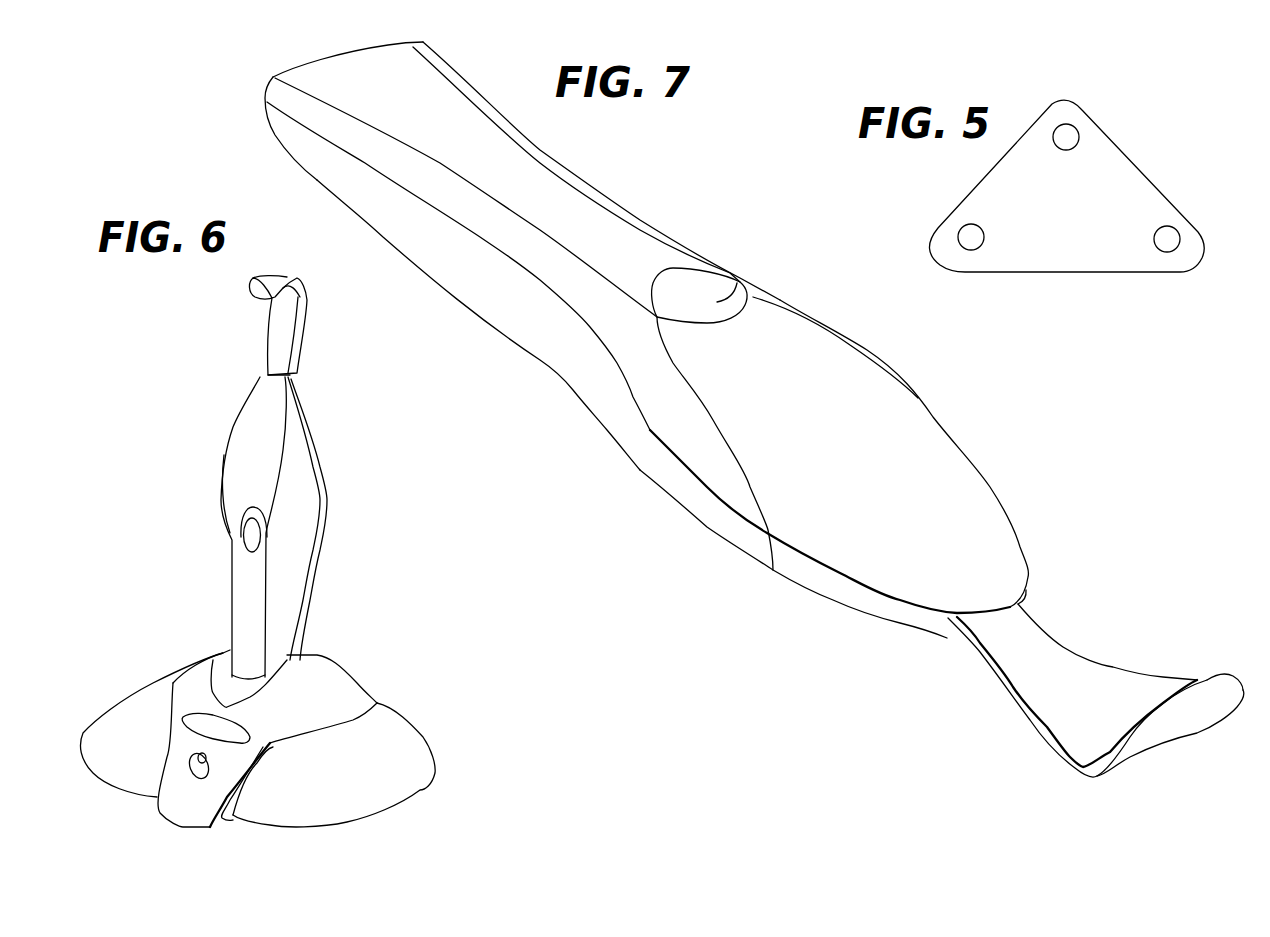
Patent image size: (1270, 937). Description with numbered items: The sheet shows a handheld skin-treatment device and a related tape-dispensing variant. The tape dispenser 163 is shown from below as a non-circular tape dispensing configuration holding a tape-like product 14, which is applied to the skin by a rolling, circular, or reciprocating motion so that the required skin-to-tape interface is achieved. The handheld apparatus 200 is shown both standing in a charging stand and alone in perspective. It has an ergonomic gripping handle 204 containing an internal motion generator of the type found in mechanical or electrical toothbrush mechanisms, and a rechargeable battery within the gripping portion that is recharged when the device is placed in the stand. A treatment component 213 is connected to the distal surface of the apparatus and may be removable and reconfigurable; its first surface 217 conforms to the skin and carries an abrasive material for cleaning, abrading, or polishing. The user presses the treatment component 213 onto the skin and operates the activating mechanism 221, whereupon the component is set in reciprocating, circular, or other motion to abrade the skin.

In FIG. 5, the tape-like product 14 is at (1192, 218).
In FIG. 5, the tape dispenser 163 is at (1138, 185).
In FIG. 7, the handheld apparatus 200 is at (700, 255).
In FIG. 6, the handheld apparatus 200 is at (227, 442).
In FIG. 7, the ergonomic gripping handle 204 is at (430, 111).
In FIG. 6, the ergonomic gripping handle 204 is at (280, 534).
In FIG. 7, the treatment component 213 is at (1197, 680).
In FIG. 6, the treatment component 213 is at (260, 300).
In FIG. 7, the first surface 217 is at (1130, 755).
In FIG. 6, the first surface 217 is at (297, 277).
In FIG. 7, the activating mechanism 221 is at (723, 302).
In FIG. 6, the activating mechanism 221 is at (252, 532).